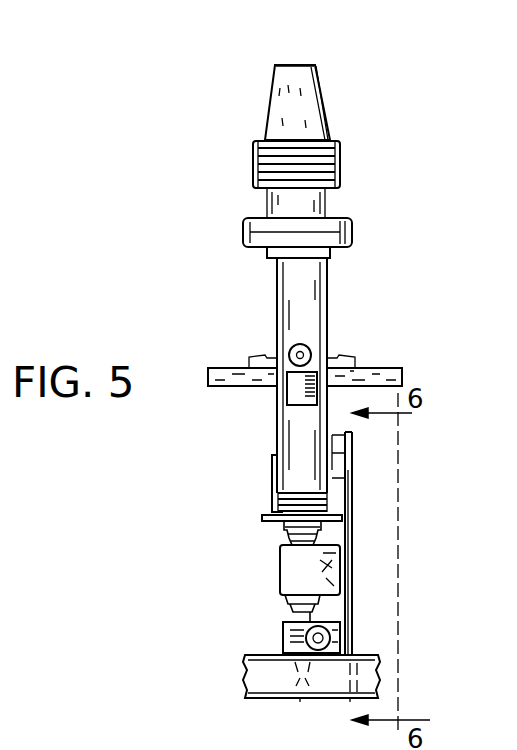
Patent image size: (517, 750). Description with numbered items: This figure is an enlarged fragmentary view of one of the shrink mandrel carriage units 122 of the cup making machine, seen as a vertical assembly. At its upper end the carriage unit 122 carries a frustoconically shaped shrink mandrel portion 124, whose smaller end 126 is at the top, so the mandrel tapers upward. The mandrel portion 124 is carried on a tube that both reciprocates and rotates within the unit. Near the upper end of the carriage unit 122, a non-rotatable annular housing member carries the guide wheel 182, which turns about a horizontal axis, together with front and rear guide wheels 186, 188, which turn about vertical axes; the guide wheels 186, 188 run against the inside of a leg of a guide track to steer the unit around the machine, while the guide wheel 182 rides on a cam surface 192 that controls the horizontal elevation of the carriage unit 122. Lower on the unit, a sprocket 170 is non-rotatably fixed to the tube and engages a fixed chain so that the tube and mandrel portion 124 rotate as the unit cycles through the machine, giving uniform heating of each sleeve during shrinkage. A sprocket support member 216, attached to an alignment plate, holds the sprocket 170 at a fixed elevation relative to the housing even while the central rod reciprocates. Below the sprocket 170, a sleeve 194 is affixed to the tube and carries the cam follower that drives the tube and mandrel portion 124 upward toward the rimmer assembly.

The shrink mandrel carriage unit 122 is at (328, 280).
The shrink mandrel portion 124 is at (308, 113).
The smaller end 126 is at (300, 65).
The sprocket 170 is at (262, 518).
The guide wheel 182 is at (308, 346).
The front guide wheel 186 is at (368, 369).
The rear guide wheel 188 is at (232, 386).
The cam surface 192 is at (287, 390).
The sleeve 194 is at (280, 573).
The sprocket support member 216 is at (272, 468).